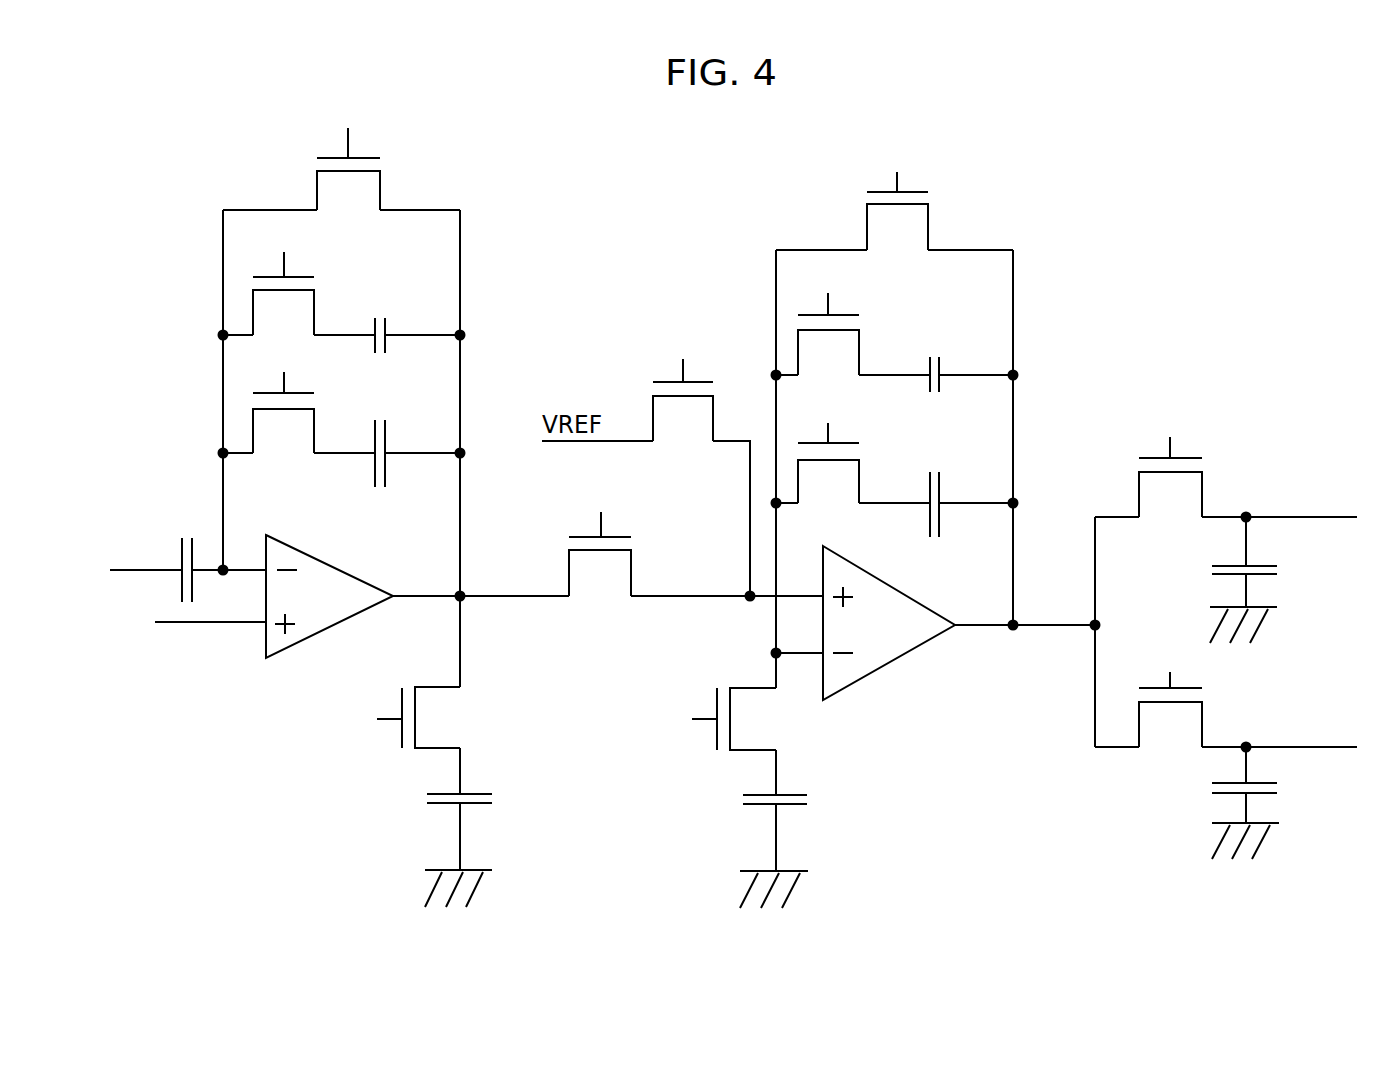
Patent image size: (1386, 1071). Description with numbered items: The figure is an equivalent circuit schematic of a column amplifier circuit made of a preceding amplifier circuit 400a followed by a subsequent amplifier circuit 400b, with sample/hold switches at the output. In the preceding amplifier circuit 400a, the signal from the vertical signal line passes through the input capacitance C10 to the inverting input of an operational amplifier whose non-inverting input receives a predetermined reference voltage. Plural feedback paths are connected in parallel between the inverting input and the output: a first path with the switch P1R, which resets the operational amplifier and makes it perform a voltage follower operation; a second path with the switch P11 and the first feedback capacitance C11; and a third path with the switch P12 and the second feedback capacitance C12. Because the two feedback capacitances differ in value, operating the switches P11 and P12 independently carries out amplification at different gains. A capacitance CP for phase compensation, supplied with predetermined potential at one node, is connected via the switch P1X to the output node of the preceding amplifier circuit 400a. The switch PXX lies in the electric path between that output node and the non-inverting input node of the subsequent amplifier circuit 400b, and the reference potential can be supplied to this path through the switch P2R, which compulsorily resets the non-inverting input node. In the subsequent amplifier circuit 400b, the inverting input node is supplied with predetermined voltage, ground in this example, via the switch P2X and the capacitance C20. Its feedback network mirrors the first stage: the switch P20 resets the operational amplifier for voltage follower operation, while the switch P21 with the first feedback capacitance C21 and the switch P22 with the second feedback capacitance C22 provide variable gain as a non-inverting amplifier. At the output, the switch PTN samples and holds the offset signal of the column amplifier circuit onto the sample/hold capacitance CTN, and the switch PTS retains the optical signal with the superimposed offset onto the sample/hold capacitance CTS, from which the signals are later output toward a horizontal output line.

The preceding amplifier circuit 400a is at (206, 168).
The subsequent amplifier circuit 400b is at (1013, 203).
The switch P1R is at (348, 154).
The switch P12 is at (283, 277).
The switch P11 is at (283, 396).
The second feedback capacitance C12 is at (382, 353).
The first feedback capacitance C11 is at (382, 469).
The input capacitance C10 is at (185, 555).
The switch P1X is at (391, 717).
The capacitance for phase compensation CP is at (481, 799).
The switch PXX is at (600, 539).
The switch P2R is at (683, 385).
The switch P20 is at (897, 195).
The switch P22 is at (828, 318).
The switch P21 is at (828, 449).
The second feedback capacitance C22 is at (937, 392).
The first feedback capacitance C21 is at (937, 521).
The switch P2X is at (709, 719).
The capacitance C20 is at (800, 798).
The switch PTS is at (1170, 462).
The switch PTN is at (1170, 688).
The sample/hold capacitance CTS is at (1270, 571).
The sample/hold capacitance CTN is at (1273, 789).